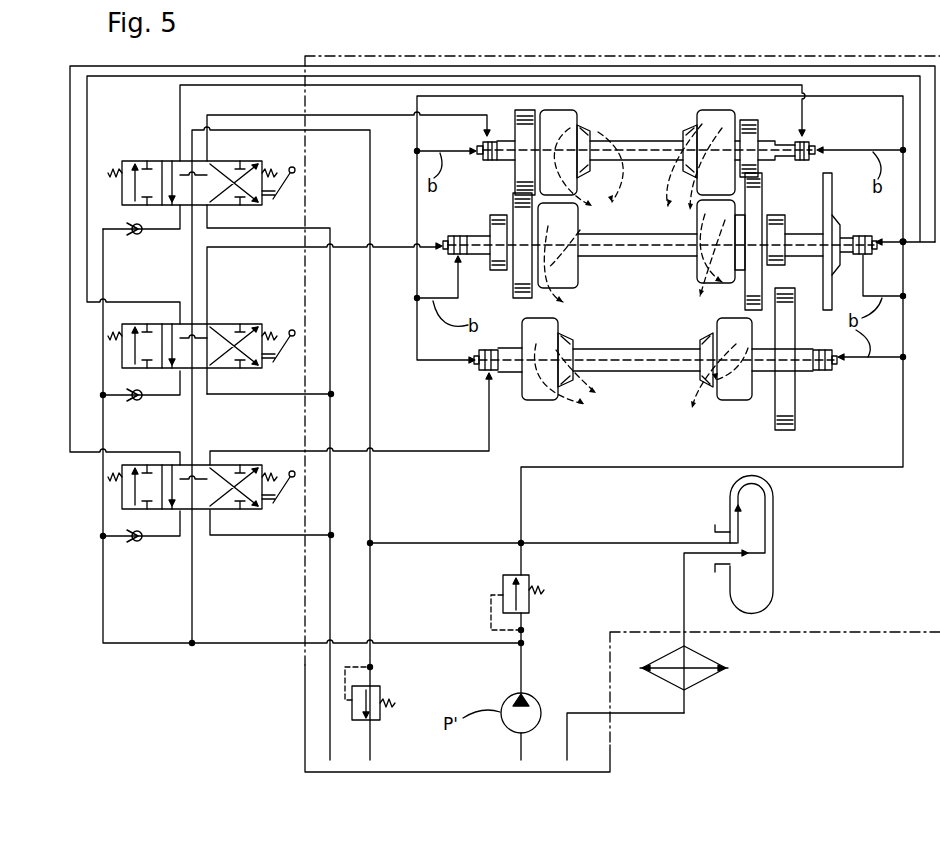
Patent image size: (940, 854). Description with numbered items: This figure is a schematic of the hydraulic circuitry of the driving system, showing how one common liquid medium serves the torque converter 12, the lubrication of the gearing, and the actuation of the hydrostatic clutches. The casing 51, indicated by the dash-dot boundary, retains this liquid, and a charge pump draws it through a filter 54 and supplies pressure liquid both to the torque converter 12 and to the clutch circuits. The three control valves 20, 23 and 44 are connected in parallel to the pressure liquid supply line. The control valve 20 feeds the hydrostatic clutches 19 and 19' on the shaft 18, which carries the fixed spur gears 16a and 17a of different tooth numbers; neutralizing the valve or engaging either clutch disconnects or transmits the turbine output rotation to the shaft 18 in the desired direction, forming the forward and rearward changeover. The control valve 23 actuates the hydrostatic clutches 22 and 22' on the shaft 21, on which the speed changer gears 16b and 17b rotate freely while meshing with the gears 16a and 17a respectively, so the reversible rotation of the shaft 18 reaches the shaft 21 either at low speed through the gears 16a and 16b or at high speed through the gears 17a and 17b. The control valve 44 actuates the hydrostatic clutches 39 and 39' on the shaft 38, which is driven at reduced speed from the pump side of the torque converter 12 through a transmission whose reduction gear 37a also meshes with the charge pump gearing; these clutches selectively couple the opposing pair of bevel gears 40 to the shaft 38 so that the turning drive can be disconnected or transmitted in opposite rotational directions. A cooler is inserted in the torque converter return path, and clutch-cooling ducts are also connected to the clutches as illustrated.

The torque converter 12 is at (800, 532).
The spur gear 16a is at (760, 133).
The speed changer gear 16b is at (762, 196).
The spur gear 17a is at (527, 110).
The speed changer gear 17b is at (514, 206).
The shaft 18 is at (617, 140).
The hydrostatic clutch 19 is at (700, 164).
The hydrostatic clutch 19' is at (686, 148).
The control valve 20 is at (143, 160).
The shaft 21 is at (632, 236).
The hydrostatic clutch 22 is at (699, 263).
The hydrostatic clutch 22' is at (583, 264).
The control valve 23 is at (233, 323).
The reduction gear 37a is at (797, 421).
The shaft 38 is at (640, 365).
The hydrostatic clutch 39 is at (538, 384).
The hydrostatic clutch 39' is at (726, 388).
The bevel gear 40 is at (565, 385).
The control valve 44 is at (124, 492).
The casing 51 is at (305, 665).
The filter 54 is at (716, 682).